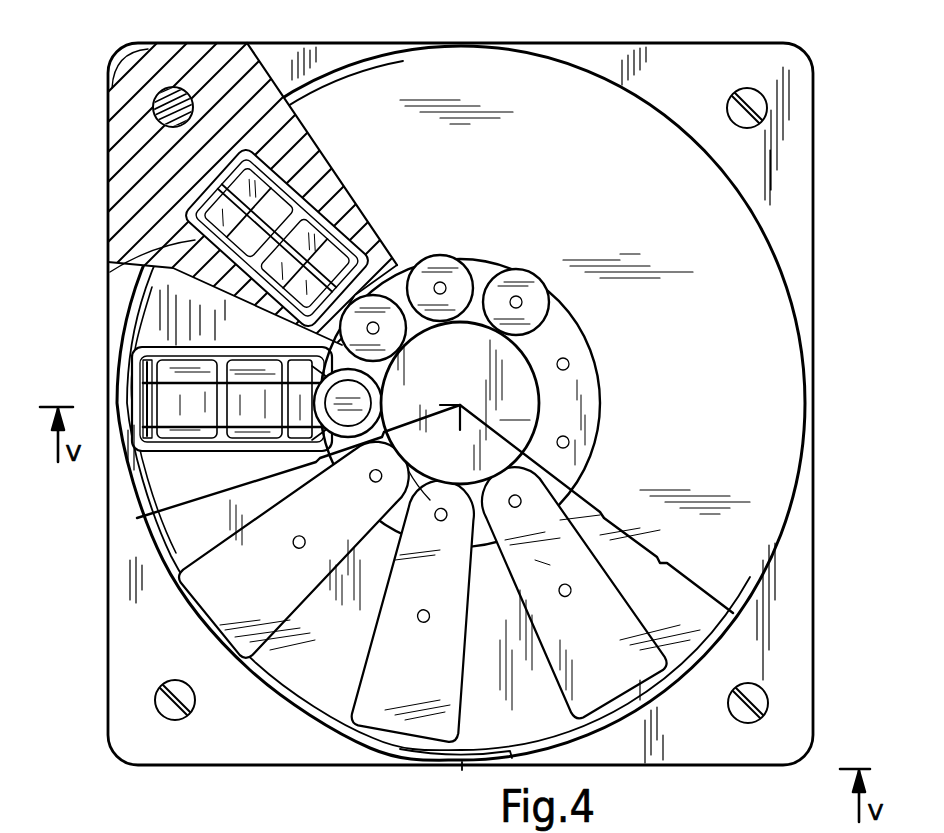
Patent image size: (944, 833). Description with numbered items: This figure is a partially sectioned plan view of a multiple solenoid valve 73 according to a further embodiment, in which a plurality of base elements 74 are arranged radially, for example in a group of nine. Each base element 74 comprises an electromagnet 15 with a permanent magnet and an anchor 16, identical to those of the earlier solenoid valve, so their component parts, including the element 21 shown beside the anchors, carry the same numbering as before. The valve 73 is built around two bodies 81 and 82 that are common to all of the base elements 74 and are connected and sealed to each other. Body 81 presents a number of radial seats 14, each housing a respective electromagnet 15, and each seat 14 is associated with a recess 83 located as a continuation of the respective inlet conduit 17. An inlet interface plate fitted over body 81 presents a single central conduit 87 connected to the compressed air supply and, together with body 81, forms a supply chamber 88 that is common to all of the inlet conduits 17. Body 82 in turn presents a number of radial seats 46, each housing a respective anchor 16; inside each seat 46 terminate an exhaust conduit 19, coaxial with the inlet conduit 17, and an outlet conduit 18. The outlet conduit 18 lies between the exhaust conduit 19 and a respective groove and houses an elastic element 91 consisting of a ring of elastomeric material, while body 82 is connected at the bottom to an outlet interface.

The radial seat 14 is at (112, 270).
The electromagnet 15 is at (322, 190).
The anchor 16 is at (334, 510).
The inlet conduit 17 is at (447, 262).
The outlet conduit 18 is at (427, 618).
The exhaust conduit 19 is at (438, 518).
The roller bearing 21 is at (368, 398).
The radial seat 46 is at (178, 450).
The multiple solenoid valve 73 is at (308, 36).
The base element 74 is at (128, 332).
The body 81 is at (216, 62).
The body 82 is at (725, 73).
The recess 83 is at (383, 292).
The central conduit 87 is at (510, 387).
The supply chamber 88 is at (594, 412).
The elastic element 91 is at (135, 354).